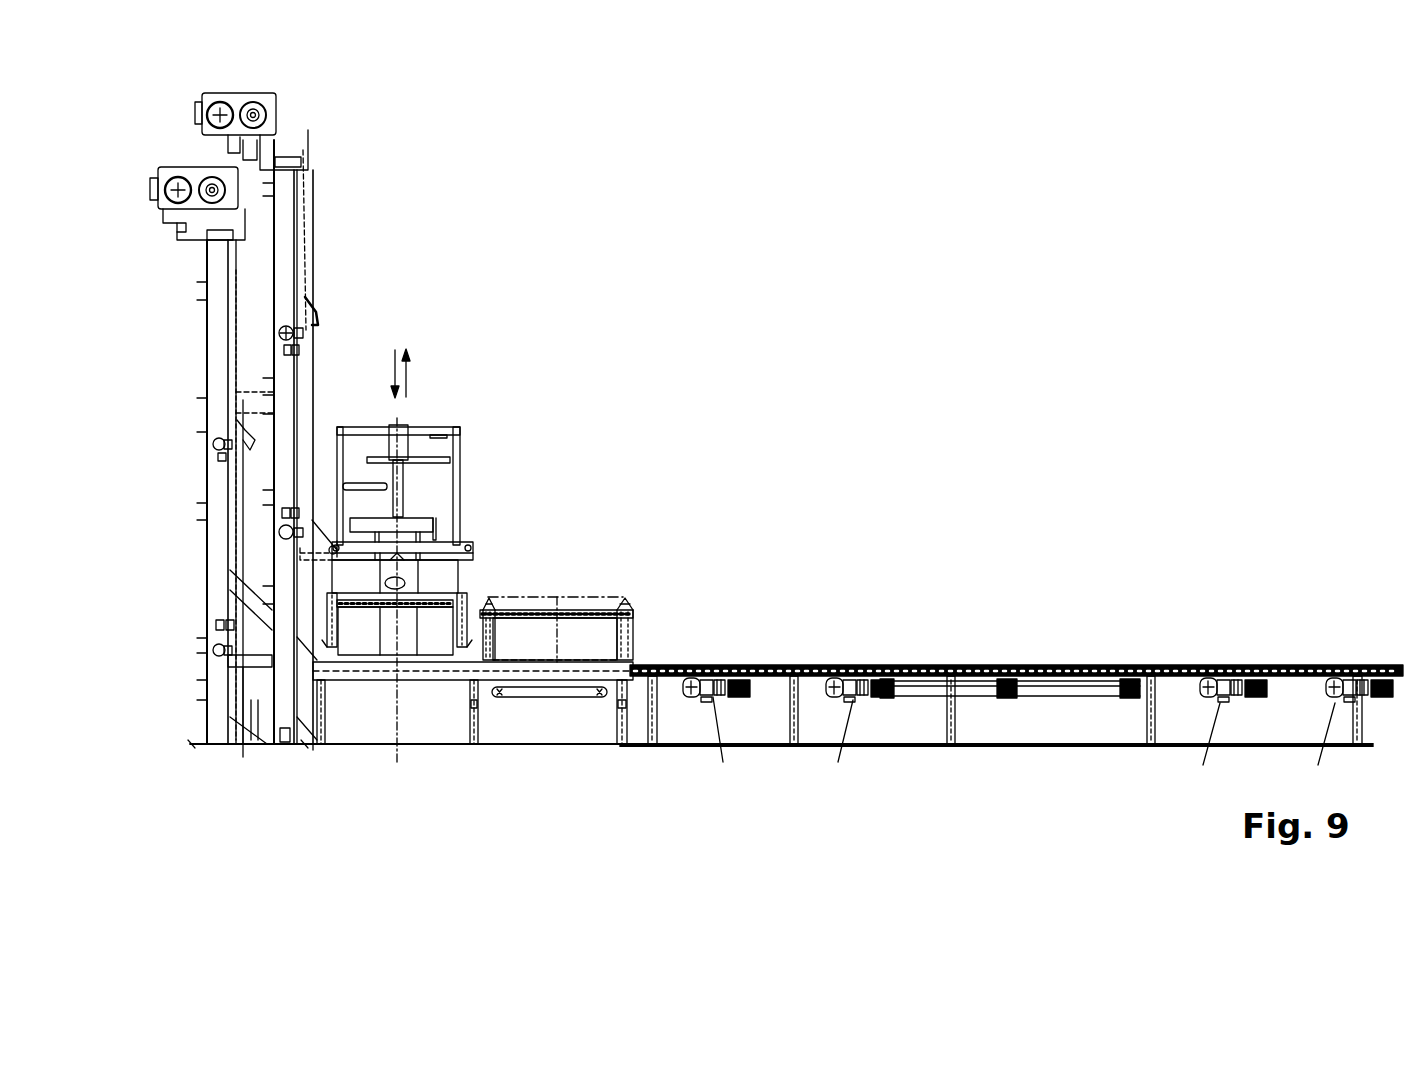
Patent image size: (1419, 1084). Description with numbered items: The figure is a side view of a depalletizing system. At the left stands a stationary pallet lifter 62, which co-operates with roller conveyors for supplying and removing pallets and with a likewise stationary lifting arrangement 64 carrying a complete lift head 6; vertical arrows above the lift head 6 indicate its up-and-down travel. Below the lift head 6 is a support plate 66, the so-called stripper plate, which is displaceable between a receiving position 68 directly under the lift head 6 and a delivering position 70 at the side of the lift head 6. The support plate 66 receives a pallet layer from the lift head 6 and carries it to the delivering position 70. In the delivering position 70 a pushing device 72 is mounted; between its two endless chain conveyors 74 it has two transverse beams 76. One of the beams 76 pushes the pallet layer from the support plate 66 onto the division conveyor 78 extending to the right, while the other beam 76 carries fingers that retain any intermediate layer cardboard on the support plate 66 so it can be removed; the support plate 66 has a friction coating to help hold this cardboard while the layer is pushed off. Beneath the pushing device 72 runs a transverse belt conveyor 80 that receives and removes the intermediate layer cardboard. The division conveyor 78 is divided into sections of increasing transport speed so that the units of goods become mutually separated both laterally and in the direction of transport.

The lift head 6 is at (458, 573).
The stationary pallet lifter 62 is at (207, 334).
The lifting arrangement 64 is at (298, 247).
The support plate 66 is at (447, 667).
The receiving position 68 is at (383, 665).
The delivering position 70 is at (577, 670).
The pushing device 72 is at (577, 607).
The endless chain conveyors 74 is at (537, 597).
The transverse beams 76 is at (472, 745).
The division conveyor 78 is at (822, 668).
The belt conveyor 80 is at (520, 693).